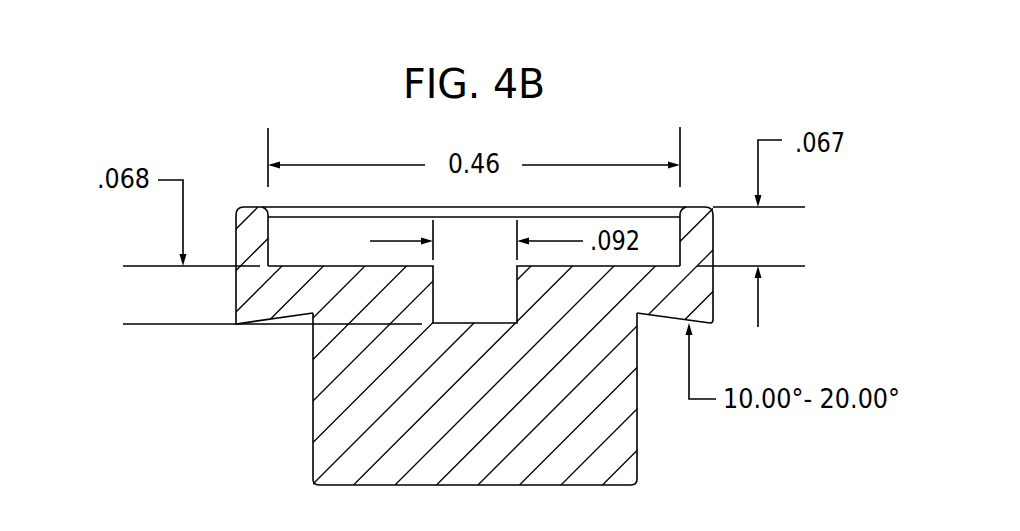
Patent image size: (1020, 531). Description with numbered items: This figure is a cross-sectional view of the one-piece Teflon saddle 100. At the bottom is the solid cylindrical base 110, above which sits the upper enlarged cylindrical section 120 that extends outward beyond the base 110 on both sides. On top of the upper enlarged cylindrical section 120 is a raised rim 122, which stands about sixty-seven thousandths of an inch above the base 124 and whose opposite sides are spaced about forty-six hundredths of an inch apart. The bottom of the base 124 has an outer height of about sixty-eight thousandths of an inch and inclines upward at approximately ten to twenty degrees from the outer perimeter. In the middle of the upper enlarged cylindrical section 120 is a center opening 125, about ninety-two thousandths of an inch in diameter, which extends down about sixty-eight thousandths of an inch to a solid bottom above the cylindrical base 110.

The Teflon saddle 100 is at (189, 67).
The solid cylindrical base 110 is at (337, 413).
The upper enlarged cylindrical section 120 is at (126, 238).
The raised rim 122 is at (253, 220).
The base 124 is at (247, 297).
The center opening 125 is at (499, 315).